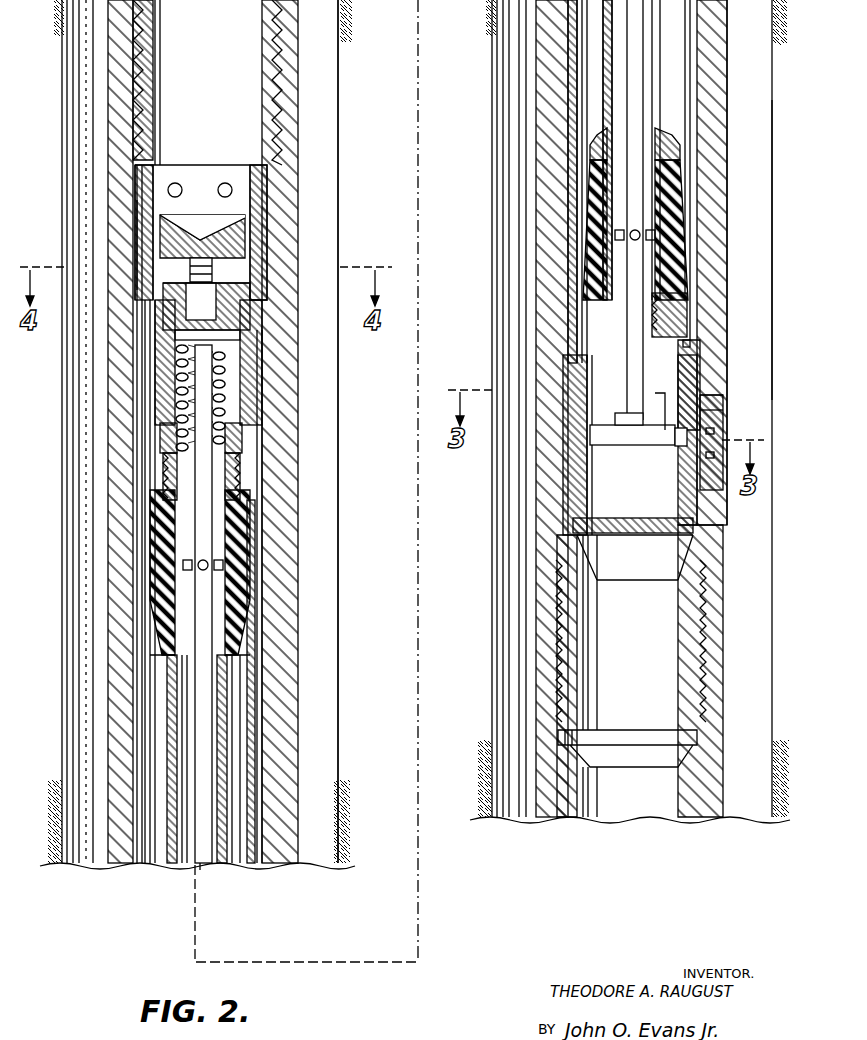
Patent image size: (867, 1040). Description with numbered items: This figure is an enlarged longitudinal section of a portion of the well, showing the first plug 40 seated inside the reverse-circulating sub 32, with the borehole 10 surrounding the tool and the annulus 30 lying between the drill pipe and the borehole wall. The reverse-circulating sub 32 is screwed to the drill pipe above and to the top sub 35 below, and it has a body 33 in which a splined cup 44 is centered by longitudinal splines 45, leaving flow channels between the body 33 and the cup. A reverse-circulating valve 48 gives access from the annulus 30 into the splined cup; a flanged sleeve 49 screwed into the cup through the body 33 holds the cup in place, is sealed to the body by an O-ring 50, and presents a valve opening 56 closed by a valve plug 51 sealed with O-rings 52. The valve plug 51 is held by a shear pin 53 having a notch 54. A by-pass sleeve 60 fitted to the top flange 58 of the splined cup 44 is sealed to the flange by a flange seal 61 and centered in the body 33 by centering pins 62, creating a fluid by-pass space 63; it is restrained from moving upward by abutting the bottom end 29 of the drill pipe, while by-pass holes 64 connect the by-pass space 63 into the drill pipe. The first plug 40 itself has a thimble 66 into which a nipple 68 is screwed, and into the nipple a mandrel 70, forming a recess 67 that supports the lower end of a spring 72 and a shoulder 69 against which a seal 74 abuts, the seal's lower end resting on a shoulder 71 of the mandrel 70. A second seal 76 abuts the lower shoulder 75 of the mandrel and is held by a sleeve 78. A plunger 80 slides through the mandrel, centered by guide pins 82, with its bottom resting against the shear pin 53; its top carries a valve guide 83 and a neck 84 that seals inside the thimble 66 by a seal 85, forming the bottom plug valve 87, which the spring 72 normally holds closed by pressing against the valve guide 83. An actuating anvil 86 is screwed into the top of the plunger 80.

The borehole 10 is at (335, 42).
The bottom end of drill pipe 29 is at (268, 178).
The annulus 30 is at (750, 275).
The reverse-circulating sub 32 is at (744, 122).
The body 33 is at (727, 58).
The top sub 35 is at (722, 812).
The first plug 40 is at (52, 738).
The splined cup 44 is at (672, 522).
The longitudinal splines 45 is at (632, 540).
The reverse-circulating valve 48 is at (712, 492).
The flanged sleeve 49 is at (716, 408).
The O-ring 50 is at (710, 390).
The valve plug 51 is at (714, 456).
The O-rings 52 is at (700, 462).
The shear pin 53 is at (635, 447).
The notch 54 is at (680, 448).
The valve opening 56 is at (714, 434).
The top flange 58 is at (700, 360).
The by-pass sleeve 60 is at (690, 308).
The seal ring 61 is at (690, 343).
The centering pins 62 is at (136, 345).
The fluid by-pass space 63 is at (146, 213).
The by-pass holes 64 is at (178, 183).
The thimble 66 is at (244, 378).
The recess 67 is at (242, 425).
The nipple 68 is at (238, 470).
The shoulder 69 is at (165, 498).
The mandrel 70 is at (172, 702).
The shoulder of the mandrel 71 is at (162, 612).
The spring 72 is at (226, 398).
The seal 74 is at (240, 660).
The lower shoulder 75 is at (668, 163).
The second seal 76 is at (596, 328).
The sleeve 78 is at (600, 312).
The plunger 80 is at (208, 863).
The guide pins 82 is at (210, 558).
The valve guide 83 is at (240, 335).
The neck 84 is at (232, 300).
The seal 85 is at (225, 290).
The actuating anvil 86 is at (165, 248).
The bottom plug valve 87 is at (162, 282).